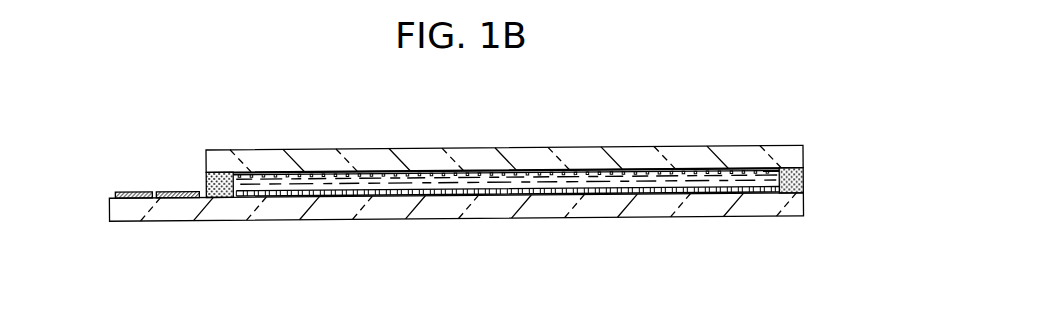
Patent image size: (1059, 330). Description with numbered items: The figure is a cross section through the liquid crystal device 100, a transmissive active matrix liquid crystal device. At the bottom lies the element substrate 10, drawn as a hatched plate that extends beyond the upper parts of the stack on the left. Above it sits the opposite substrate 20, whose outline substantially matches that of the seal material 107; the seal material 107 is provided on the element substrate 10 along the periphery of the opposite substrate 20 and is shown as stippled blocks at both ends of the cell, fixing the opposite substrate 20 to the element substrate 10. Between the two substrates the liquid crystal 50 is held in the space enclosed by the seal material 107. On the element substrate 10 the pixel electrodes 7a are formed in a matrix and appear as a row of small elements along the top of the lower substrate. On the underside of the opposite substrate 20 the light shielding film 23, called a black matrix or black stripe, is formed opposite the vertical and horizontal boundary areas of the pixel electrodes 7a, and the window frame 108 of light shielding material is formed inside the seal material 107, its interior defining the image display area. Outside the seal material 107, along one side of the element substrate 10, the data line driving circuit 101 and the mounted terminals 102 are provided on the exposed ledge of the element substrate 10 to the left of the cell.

The liquid crystal device 100 is at (455, 160).
The opposite substrate 20 is at (787, 152).
The element substrate 10 is at (695, 207).
The light shielding film 23 is at (547, 174).
The window frame 108 is at (247, 173).
The seal material 107 is at (218, 198).
The mounted terminals 102 is at (135, 192).
The data line driving circuit 101 is at (182, 192).
The pixel electrodes 7a is at (402, 197).
The liquid crystal 50 is at (547, 190).